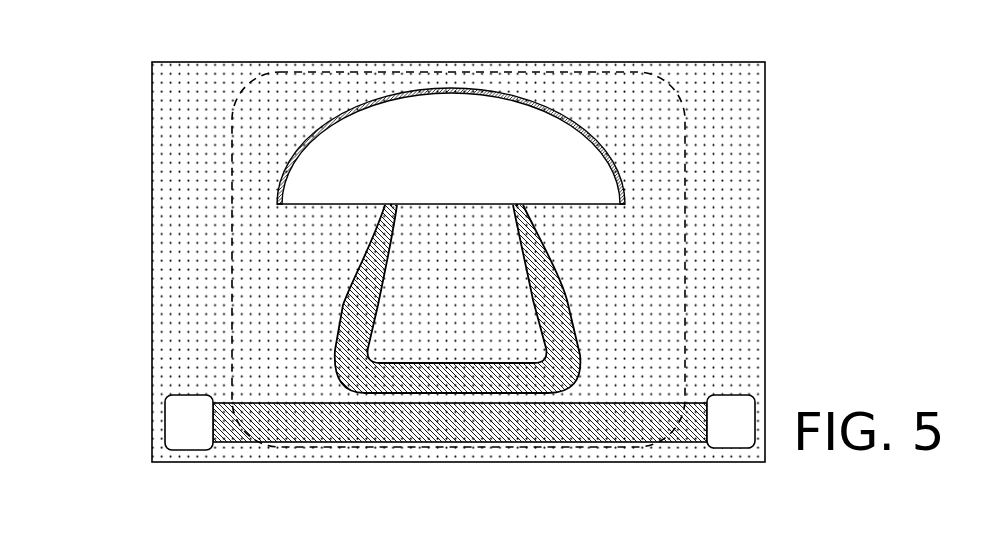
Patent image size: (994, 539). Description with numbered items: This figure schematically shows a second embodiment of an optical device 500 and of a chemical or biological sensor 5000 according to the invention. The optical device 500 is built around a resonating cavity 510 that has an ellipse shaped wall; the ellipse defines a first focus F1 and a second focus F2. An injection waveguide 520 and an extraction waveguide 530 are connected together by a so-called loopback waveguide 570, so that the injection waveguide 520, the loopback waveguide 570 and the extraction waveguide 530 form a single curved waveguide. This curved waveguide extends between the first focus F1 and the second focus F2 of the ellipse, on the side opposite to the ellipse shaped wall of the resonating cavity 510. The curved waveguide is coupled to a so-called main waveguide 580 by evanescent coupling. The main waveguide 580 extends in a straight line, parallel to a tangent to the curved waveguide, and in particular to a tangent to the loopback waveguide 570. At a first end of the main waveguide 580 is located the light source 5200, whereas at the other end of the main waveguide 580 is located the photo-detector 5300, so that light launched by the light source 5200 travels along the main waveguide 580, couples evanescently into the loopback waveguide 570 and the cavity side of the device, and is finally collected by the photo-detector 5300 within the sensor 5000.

The chemical or biological sensor 5000 is at (791, 58).
The optical device 500 is at (662, 88).
The resonating cavity 510 is at (330, 153).
The injection waveguide 520 is at (362, 305).
The extraction waveguide 530 is at (552, 298).
The loopback waveguide 570 is at (455, 377).
The main waveguide 580 is at (230, 428).
The light source 5200 is at (178, 420).
The photo-detector 5300 is at (740, 415).
The first focus F1 is at (391, 204).
The second focus F2 is at (517, 204).